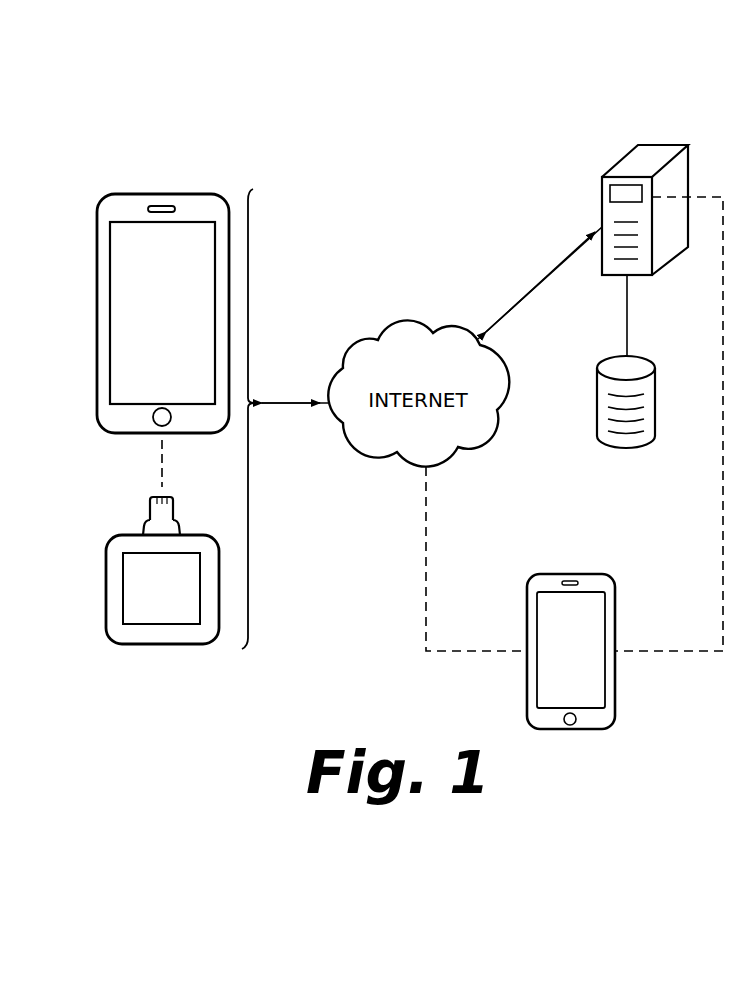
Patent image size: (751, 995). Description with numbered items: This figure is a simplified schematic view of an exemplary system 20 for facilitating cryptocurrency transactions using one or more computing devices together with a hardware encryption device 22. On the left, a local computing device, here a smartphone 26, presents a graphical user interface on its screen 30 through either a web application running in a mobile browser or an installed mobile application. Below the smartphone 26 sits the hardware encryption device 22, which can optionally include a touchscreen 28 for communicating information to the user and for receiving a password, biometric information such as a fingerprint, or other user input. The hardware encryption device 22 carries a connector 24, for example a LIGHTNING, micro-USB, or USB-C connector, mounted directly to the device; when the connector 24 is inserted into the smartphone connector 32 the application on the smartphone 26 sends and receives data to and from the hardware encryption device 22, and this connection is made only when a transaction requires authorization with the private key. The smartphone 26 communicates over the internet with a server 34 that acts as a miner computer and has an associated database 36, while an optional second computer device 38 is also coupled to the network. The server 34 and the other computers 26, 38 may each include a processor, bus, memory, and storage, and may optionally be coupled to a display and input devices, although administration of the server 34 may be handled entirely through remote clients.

The system 20 is at (536, 84).
The hardware encryption device 22 is at (174, 600).
The connector 24 is at (148, 505).
The smartphone 26 is at (127, 194).
The touchscreen 28 is at (156, 626).
The screen 30 is at (173, 320).
The smartphone connector 32 is at (150, 441).
The server 34 is at (602, 205).
The database 36 is at (597, 411).
The second computer device 38 is at (615, 605).